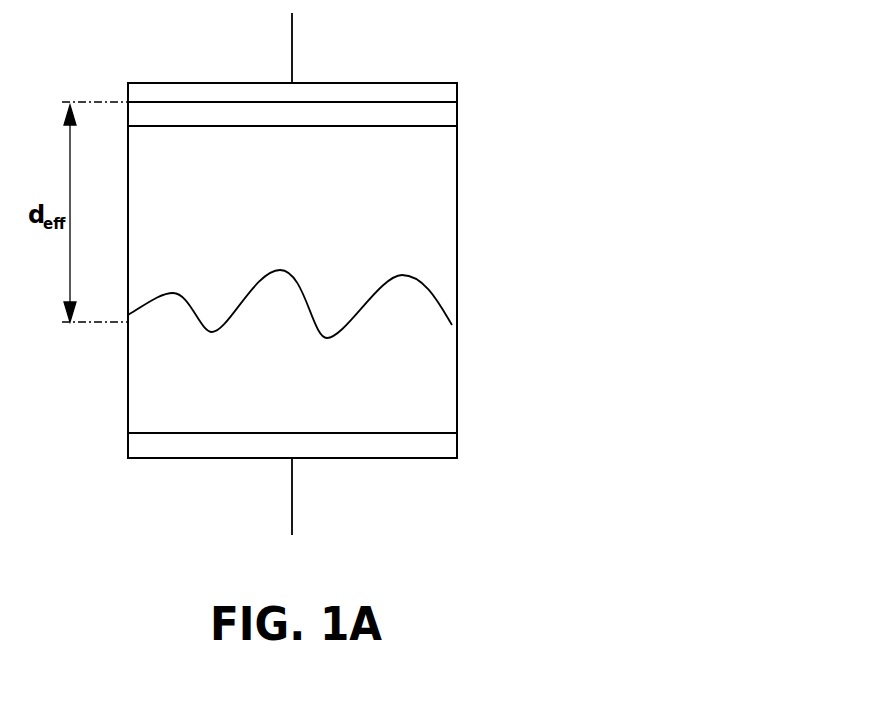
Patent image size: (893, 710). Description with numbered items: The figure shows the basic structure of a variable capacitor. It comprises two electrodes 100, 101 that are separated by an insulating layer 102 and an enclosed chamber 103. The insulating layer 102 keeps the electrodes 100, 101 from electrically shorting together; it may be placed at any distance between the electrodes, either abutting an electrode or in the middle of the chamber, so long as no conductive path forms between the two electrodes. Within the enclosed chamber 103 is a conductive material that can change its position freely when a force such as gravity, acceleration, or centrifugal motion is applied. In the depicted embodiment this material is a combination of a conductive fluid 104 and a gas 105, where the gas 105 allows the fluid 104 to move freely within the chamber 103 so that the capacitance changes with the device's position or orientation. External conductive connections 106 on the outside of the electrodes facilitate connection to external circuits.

The electrode 100 is at (463, 76).
The electrode 101 is at (130, 460).
The insulating layer 102 is at (458, 114).
The enclosed chamber 103 is at (457, 290).
The fluid 104 is at (290, 332).
The gas 105 is at (286, 207).
The external conductive connections 106 is at (311, 27).